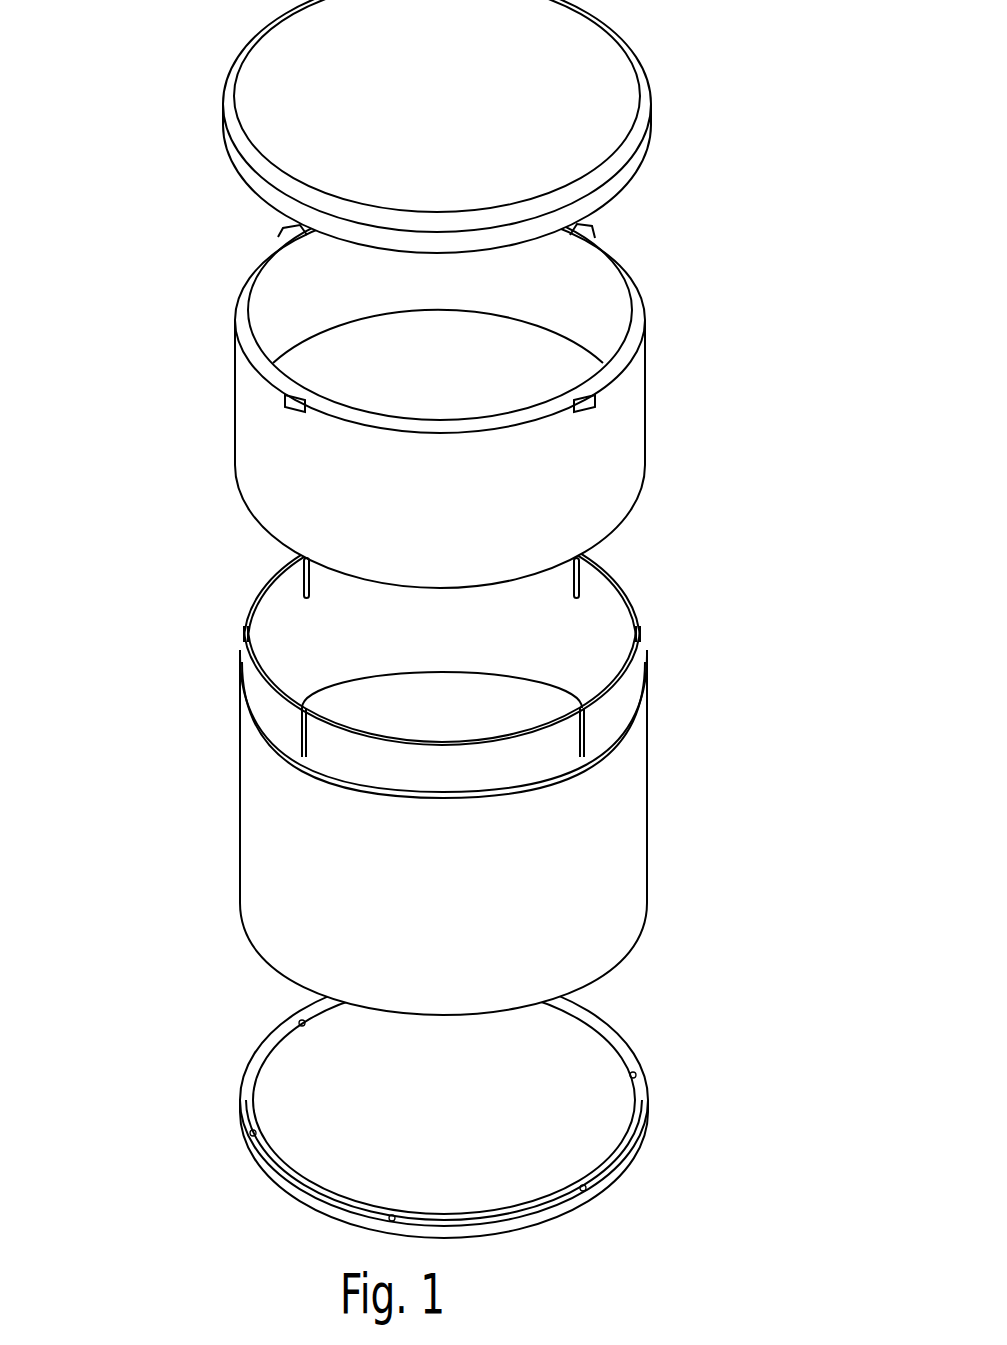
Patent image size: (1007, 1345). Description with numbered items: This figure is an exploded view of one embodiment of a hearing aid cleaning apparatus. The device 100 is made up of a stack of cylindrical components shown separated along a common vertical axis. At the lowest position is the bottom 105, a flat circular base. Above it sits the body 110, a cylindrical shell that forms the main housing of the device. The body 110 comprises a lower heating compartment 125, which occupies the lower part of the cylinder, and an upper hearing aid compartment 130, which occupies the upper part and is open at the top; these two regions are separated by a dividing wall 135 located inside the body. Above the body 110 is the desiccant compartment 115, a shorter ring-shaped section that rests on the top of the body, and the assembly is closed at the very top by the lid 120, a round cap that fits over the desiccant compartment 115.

The device 100 is at (100, 90).
The bottom 105 is at (252, 1150).
The body 110 is at (454, 832).
The desiccant compartment 115 is at (236, 436).
The lid 120 is at (647, 152).
The lower heating compartment 125 is at (650, 900).
The upper hearing aid compartment 130 is at (646, 758).
The dividing wall 135 is at (497, 675).